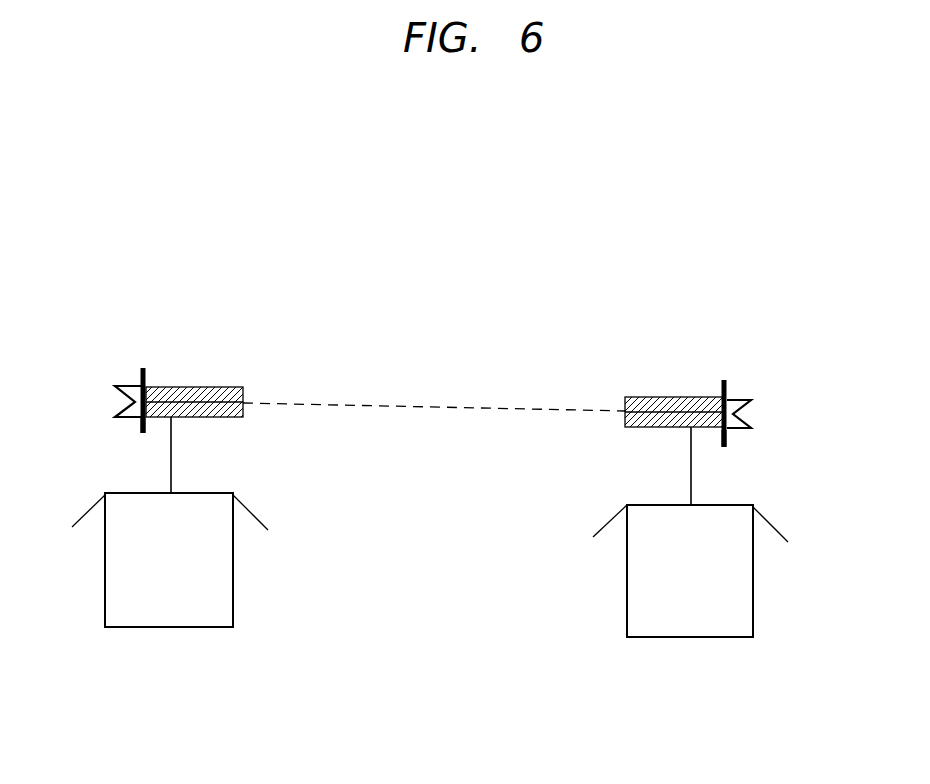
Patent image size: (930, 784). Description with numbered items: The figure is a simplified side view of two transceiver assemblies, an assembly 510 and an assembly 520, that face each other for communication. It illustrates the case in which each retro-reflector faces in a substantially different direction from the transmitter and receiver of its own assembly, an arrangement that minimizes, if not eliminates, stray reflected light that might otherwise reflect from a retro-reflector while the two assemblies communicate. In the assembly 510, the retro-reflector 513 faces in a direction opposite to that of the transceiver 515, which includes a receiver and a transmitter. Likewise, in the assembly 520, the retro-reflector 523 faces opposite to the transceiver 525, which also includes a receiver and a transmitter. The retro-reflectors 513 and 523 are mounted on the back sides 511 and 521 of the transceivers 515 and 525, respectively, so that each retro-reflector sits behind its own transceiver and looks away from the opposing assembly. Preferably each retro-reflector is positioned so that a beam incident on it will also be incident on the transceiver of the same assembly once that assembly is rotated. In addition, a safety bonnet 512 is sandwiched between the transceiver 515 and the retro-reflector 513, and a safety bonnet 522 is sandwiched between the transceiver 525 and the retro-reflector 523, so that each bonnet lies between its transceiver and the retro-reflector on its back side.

The assembly 510 is at (273, 330).
The back side 511 is at (148, 372).
The safety bonnet 512 is at (140, 423).
The retro-reflector 513 is at (116, 389).
The transceiver 515 is at (220, 418).
The assembly 520 is at (772, 322).
The back side 521 is at (727, 438).
The safety bonnet 522 is at (722, 448).
The retro-reflector 523 is at (750, 402).
The transceiver 525 is at (650, 427).